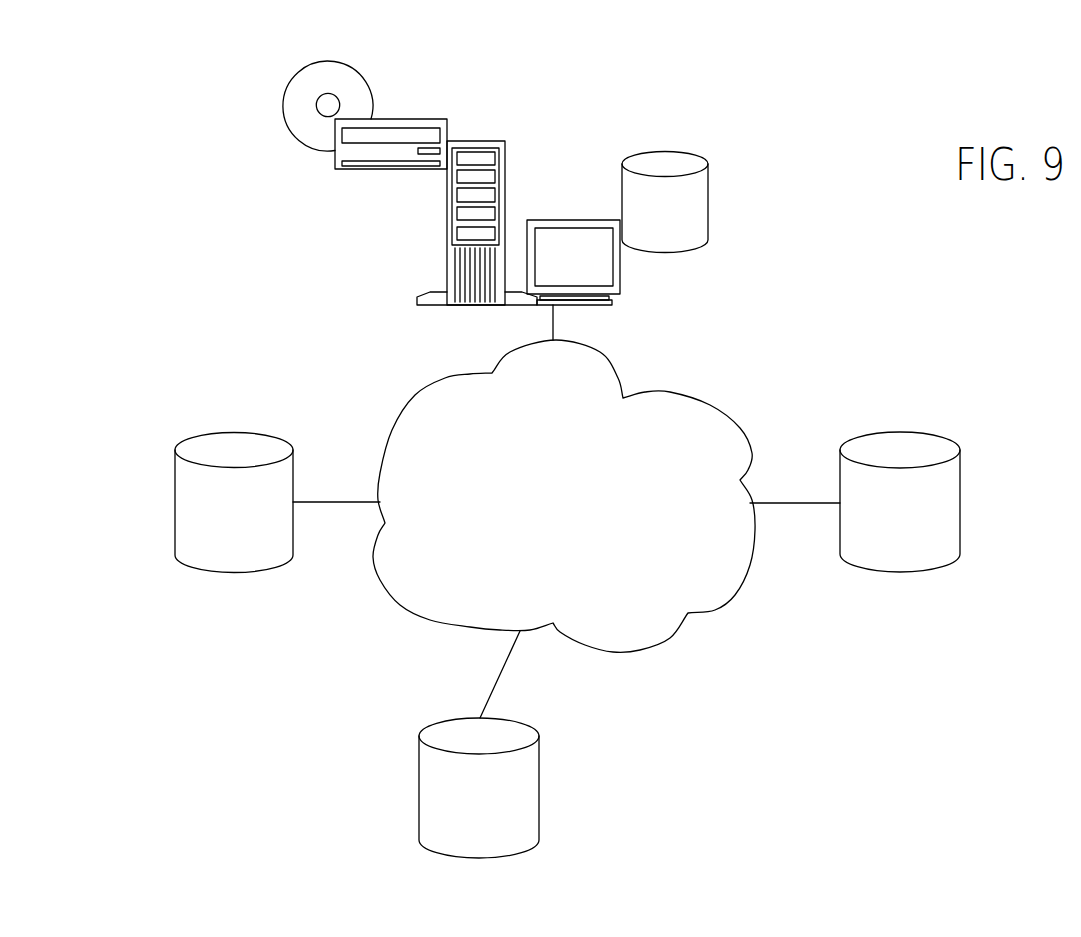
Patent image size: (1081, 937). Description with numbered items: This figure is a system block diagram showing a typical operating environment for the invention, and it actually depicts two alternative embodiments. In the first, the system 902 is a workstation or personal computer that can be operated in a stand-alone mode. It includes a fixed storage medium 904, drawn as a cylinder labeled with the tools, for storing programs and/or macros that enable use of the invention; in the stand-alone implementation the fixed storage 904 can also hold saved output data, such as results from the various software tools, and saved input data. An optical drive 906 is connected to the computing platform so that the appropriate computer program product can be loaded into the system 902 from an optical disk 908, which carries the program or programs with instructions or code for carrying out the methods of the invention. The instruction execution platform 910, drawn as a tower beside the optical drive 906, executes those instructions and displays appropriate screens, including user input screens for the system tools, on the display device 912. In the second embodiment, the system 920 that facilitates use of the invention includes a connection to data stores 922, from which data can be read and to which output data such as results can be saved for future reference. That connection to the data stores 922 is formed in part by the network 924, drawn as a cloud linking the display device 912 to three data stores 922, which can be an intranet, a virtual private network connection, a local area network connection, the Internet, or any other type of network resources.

The system 902 is at (717, 272).
The fixed storage medium 904 is at (709, 190).
The optical drive 906 is at (333, 162).
The optical disk 908 is at (292, 88).
The instruction execution platform 910 is at (472, 140).
The display device 912 is at (621, 282).
The system 920 is at (172, 357).
The data stores 922 is at (175, 447).
The network 924 is at (407, 415).